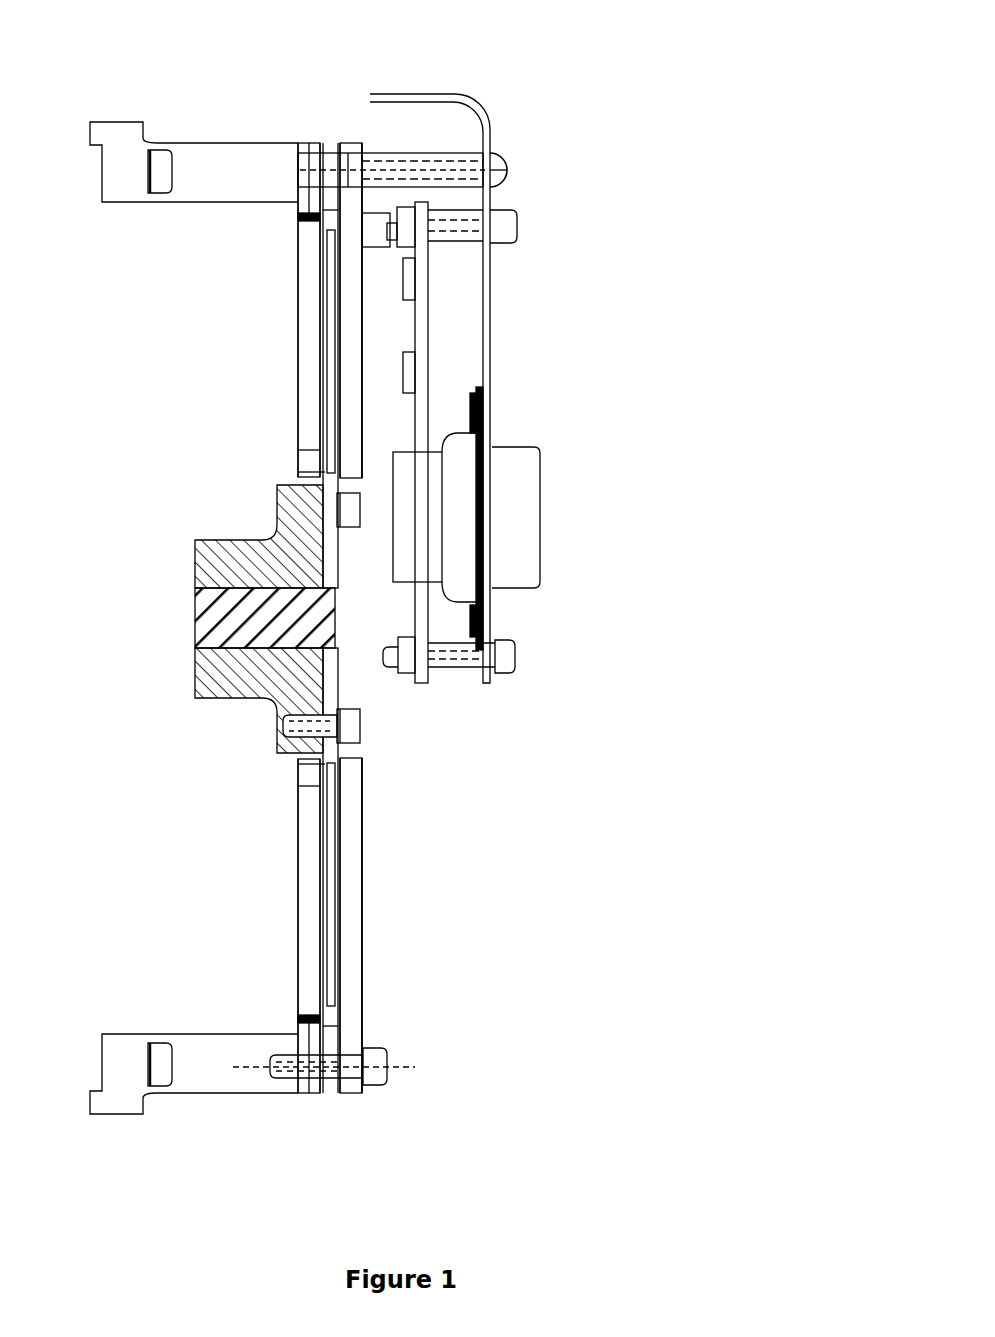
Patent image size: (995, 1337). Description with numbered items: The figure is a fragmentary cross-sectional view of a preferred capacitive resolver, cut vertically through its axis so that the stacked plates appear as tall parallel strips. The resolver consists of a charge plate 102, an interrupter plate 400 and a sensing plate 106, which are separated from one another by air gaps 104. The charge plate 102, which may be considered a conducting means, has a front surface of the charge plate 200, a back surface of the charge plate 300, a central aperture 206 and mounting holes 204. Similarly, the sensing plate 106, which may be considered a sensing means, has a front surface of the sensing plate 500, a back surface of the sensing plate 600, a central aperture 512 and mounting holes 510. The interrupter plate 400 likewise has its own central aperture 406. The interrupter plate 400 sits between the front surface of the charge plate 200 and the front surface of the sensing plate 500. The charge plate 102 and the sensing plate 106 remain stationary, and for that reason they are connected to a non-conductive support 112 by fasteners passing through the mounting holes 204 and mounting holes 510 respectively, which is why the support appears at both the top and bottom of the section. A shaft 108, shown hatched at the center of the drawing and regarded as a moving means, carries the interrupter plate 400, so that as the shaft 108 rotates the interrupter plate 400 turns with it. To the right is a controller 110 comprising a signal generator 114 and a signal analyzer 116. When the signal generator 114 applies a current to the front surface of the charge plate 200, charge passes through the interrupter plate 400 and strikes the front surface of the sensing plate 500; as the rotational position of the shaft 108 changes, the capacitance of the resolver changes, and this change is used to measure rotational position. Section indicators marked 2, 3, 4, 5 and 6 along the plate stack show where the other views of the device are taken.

The charge plate 102 is at (310, 250).
The air gaps 104 is at (318, 440).
The sensing plate 106 is at (350, 353).
The shaft 108 is at (273, 565).
The controller 110 is at (420, 320).
The non-conductive support 112 is at (217, 168).
The signal generator 114 is at (407, 272).
The signal analyzer 116 is at (407, 373).
The front surface of the charge plate 200 is at (318, 277).
The mounting holes 204 is at (308, 143).
The central aperture 206 is at (300, 484).
The back surface of the charge plate 300 is at (300, 303).
The interrupter plate 400 is at (328, 327).
The central aperture 406 is at (337, 545).
The front surface of the sensing plate 500 is at (362, 405).
The mounting holes 510 is at (348, 143).
The central aperture 512 is at (362, 412).
The back surface of the sensing plate 600 is at (340, 380).
The section line for FIG. 2 is at (308, 107).
The section line for FIG. 3 is at (298, 143).
The section line for FIG. 4 is at (328, 143).
The section line for FIG. 5 is at (338, 143).
The section line for FIG. 6 is at (342, 88).